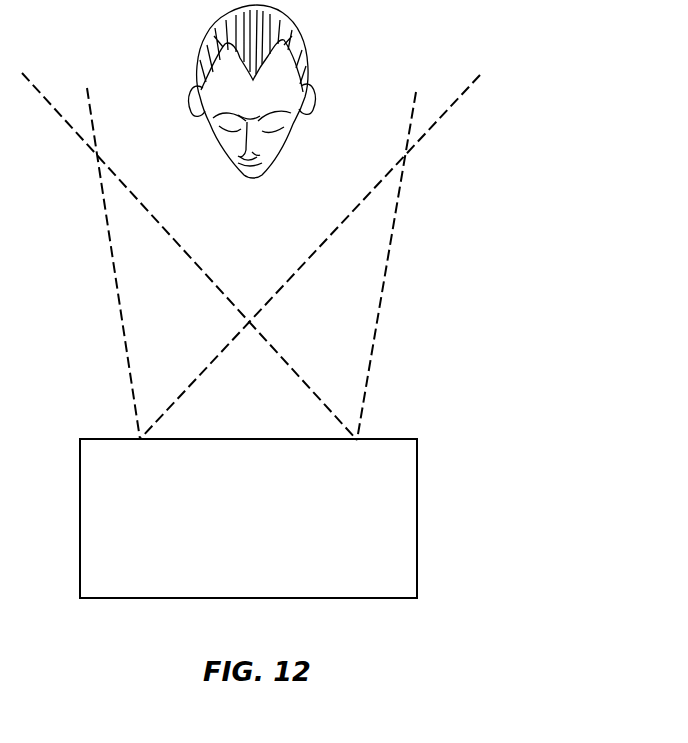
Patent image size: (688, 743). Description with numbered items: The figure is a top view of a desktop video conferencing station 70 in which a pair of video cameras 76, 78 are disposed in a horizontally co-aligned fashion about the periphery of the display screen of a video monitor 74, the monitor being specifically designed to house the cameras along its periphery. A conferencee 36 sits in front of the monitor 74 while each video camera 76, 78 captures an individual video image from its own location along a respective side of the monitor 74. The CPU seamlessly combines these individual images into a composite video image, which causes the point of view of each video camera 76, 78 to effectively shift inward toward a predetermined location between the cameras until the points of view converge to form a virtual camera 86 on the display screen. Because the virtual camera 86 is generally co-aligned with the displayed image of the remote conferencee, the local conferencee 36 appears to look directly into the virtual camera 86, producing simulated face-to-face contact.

The conferencee 36 is at (297, 50).
The detection system 70 is at (508, 383).
The video monitor 74 is at (418, 490).
The video camera 76 is at (359, 438).
The video camera 78 is at (138, 437).
The virtual camera 86 is at (236, 439).